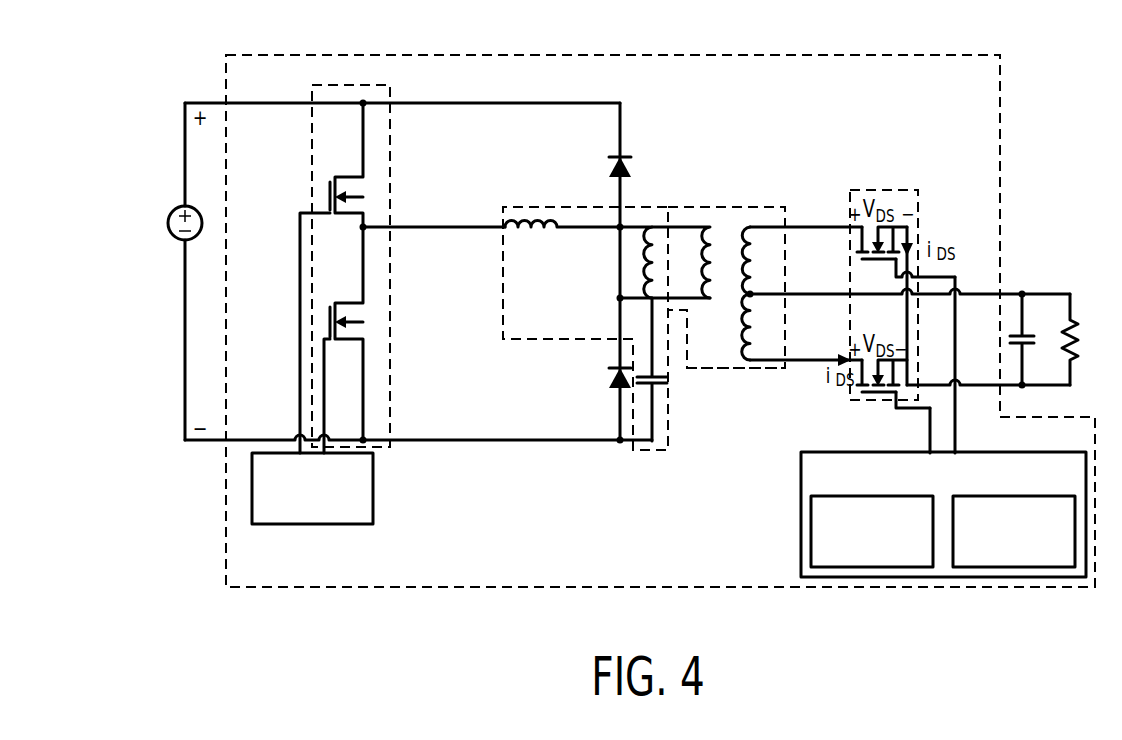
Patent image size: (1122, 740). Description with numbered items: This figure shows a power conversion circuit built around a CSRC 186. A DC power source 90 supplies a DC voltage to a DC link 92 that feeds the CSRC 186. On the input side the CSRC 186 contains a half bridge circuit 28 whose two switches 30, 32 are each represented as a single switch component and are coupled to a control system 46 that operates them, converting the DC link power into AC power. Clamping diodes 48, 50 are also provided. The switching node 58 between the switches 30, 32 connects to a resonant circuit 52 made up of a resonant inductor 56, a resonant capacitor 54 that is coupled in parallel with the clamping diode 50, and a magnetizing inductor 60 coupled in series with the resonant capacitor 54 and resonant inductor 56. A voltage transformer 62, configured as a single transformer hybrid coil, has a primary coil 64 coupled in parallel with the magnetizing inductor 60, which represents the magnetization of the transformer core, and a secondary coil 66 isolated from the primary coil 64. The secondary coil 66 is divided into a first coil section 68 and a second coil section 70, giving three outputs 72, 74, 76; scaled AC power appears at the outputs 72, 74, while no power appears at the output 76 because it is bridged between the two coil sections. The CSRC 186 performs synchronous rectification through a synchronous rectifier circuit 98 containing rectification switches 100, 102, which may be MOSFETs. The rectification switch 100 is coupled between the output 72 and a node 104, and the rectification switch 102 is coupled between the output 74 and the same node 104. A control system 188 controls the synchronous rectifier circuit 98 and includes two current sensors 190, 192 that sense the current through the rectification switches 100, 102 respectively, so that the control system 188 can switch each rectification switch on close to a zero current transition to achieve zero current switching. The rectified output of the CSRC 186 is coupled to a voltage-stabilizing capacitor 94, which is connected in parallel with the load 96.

The half bridge circuit 28 is at (352, 85).
The switch 30 is at (350, 177).
The switch 32 is at (350, 303).
The control system 46 is at (373, 490).
The clamping diode 48 is at (610, 162).
The clamping diode 50 is at (611, 378).
The resonant circuit 52 is at (590, 207).
The resonant capacitor 54 is at (656, 384).
The resonant inductor 56 is at (527, 222).
The node 58 is at (363, 227).
The magnetizing inductor 60 is at (645, 262).
The voltage transformer 62 is at (728, 207).
The primary coil 64 is at (705, 242).
The secondary coil 66 is at (749, 222).
The first coil section 68 is at (729, 327).
The second coil section 70 is at (745, 362).
The output 72 is at (770, 207).
The output 74 is at (772, 368).
The output 76 is at (775, 296).
The DC power source 90 is at (170, 215).
The DC link 92 is at (212, 103).
The voltage-stabilizing capacitor 94 is at (1027, 335).
The load 96 is at (1076, 323).
The synchronous rectifier circuit 98 is at (884, 190).
The rectification switch 100 is at (902, 227).
The rectification switch 102 is at (880, 400).
The node 104 is at (902, 356).
The CSRC 186 is at (612, 55).
The control system 188 is at (801, 512).
The current sensor 190 is at (870, 567).
The current sensor 192 is at (1015, 567).